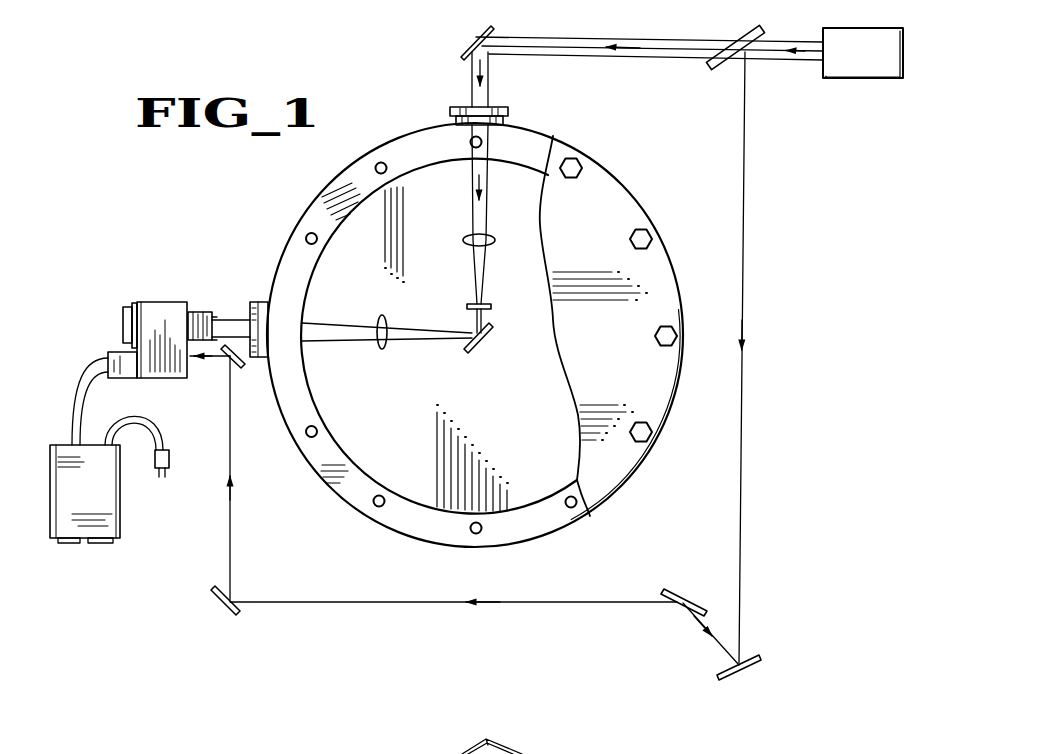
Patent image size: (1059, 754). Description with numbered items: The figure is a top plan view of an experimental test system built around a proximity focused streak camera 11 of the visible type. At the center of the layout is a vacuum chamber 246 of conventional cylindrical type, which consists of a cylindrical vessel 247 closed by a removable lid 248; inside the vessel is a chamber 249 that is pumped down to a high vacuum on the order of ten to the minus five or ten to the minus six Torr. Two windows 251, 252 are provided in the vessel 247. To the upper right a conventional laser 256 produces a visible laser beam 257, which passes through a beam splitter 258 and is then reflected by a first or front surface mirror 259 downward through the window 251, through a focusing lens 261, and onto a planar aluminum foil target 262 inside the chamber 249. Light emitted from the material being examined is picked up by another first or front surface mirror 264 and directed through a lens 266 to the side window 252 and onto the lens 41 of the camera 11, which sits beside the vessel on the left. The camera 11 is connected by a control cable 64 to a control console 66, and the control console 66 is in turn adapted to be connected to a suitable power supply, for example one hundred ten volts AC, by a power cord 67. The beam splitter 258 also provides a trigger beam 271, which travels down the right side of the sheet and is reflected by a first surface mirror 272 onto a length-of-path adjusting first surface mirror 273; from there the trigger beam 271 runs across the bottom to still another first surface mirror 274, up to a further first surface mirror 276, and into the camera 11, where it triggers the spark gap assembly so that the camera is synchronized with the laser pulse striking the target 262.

The streak camera 11 is at (128, 298).
The lens 41 is at (196, 312).
The control cable 64 is at (84, 380).
The control console 66 is at (122, 518).
The power cord 67 is at (170, 454).
The vacuum chamber 246 is at (645, 190).
The cylindrical vessel 247 is at (532, 520).
The removable lid 248 is at (660, 405).
The chamber 249 is at (410, 498).
The window 251 is at (510, 118).
The window 252 is at (262, 300).
The laser 256 is at (838, 80).
The laser beam 257 is at (768, 62).
The beam splitter 258 is at (740, 36).
The first surface mirror 259 is at (470, 34).
The focusing lens 261 is at (466, 238).
The planar aluminum foil target 262 is at (484, 306).
The first surface mirror 264 is at (481, 350).
The lens 266 is at (383, 350).
The trigger beam 271 is at (745, 234).
The first surface mirror 272 is at (762, 660).
The length-of-path adjusting first surface mirror 273 is at (693, 598).
The first surface mirror 274 is at (222, 612).
The first surface mirror 276 is at (240, 372).